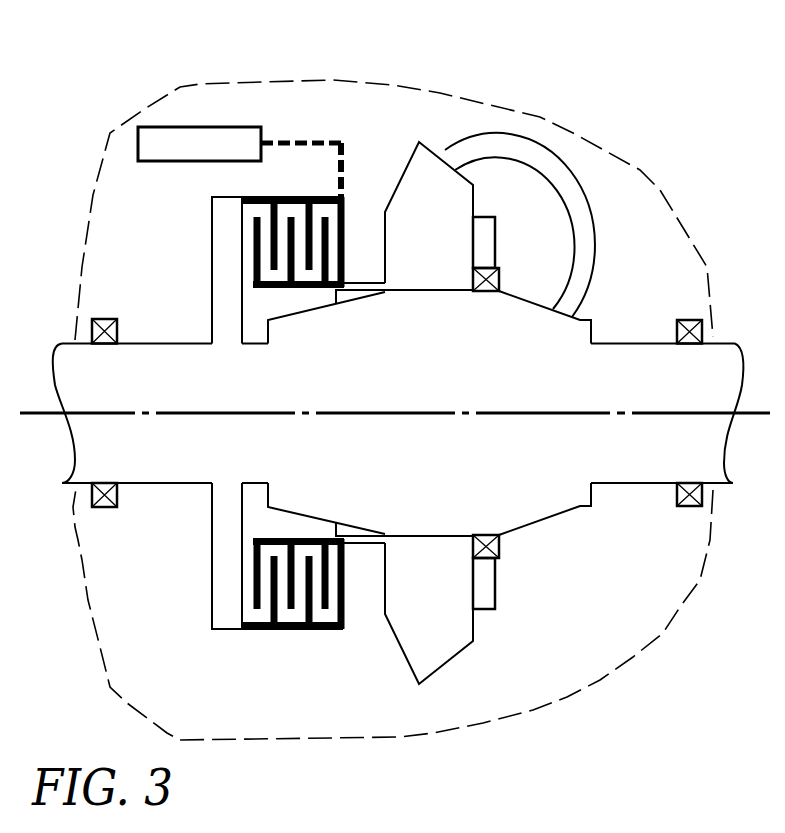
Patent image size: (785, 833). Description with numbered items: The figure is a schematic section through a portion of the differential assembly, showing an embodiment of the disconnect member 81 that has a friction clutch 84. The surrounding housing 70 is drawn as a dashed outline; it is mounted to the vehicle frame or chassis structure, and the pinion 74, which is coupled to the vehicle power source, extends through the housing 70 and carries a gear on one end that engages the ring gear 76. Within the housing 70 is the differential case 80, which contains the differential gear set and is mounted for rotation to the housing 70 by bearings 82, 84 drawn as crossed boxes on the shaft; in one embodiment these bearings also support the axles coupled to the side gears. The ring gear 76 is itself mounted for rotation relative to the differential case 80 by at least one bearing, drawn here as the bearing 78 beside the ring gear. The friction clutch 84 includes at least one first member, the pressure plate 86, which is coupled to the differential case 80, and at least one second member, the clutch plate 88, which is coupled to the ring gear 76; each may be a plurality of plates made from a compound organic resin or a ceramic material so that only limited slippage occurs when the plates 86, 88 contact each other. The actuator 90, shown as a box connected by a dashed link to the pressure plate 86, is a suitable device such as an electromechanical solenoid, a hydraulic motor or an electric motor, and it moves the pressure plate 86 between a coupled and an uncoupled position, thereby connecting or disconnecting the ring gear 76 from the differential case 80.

The housing 70 is at (270, 82).
The pinion 74 is at (578, 130).
The ring gear 76 is at (398, 642).
The bearing 78 is at (498, 548).
The differential case 80 is at (547, 518).
The disconnect member 81 is at (318, 122).
The bearing 82 is at (100, 507).
The friction clutch 84 is at (352, 167).
The pressure plate 86 is at (345, 240).
The clutch plate 88 is at (328, 268).
The actuator 90 is at (181, 127).